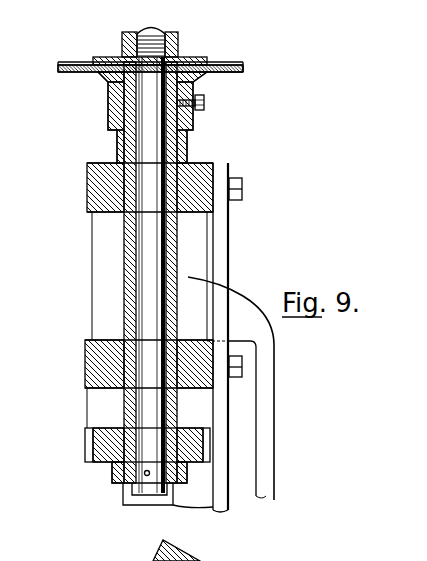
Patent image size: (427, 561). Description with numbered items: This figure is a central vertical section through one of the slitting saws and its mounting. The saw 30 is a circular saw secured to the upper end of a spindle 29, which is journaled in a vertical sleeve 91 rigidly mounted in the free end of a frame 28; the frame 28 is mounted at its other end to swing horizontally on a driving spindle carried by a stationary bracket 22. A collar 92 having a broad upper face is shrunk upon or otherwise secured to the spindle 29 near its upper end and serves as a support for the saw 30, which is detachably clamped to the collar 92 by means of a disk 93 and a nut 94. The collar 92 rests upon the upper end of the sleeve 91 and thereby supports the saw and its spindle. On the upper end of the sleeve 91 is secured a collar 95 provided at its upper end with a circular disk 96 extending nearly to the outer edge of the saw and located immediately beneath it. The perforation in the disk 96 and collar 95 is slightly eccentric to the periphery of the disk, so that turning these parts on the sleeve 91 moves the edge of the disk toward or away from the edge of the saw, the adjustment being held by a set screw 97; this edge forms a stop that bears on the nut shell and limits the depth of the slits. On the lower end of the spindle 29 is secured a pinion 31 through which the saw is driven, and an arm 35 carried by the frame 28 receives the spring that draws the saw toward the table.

The disk 93 is at (118, 57).
The nut 94 is at (179, 42).
The saw 30 is at (228, 64).
The collar 92 is at (112, 78).
The circular disk 96 is at (224, 74).
The set screw 97 is at (206, 108).
The collar 95 is at (190, 132).
The frame 28 is at (87, 187).
The spindle 29 is at (123, 267).
The vertical sleeve 91 is at (177, 255).
The arm 35 is at (223, 420).
The stationary bracket 22 is at (274, 482).
The pinion 31 is at (93, 443).